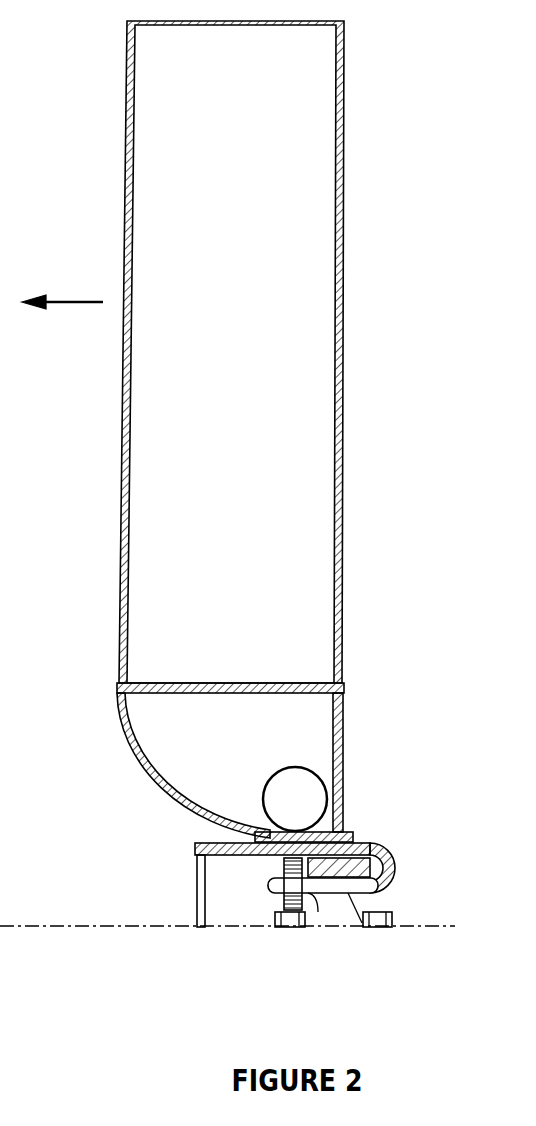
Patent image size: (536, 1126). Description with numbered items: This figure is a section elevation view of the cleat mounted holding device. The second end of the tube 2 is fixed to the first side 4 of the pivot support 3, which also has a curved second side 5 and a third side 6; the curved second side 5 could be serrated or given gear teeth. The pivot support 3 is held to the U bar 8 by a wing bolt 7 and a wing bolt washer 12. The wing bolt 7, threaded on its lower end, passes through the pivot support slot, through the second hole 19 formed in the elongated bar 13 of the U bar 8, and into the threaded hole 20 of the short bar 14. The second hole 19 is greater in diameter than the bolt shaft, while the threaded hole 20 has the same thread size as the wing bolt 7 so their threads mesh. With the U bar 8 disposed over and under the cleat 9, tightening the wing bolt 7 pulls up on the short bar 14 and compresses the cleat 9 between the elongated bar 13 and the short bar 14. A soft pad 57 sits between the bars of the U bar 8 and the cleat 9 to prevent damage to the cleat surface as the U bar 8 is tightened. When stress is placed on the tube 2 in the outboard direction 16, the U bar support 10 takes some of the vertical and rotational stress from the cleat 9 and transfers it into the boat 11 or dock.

The tube 2 is at (124, 378).
The pivot support 3 is at (350, 752).
The first side 4 is at (222, 682).
The curved second side 5 is at (122, 732).
The third side 6 is at (350, 786).
The wing bolt 7 is at (287, 767).
The U bar 8 is at (390, 884).
The cleat 9 is at (395, 868).
The U bar support 10 is at (197, 890).
The boat 11 is at (133, 925).
The wing bolt washer 12 is at (290, 820).
The elongated bar 13 is at (200, 843).
The short bar 14 is at (272, 890).
The outboard direction 16 is at (83, 300).
The second hole 19 is at (355, 832).
The threaded hole 20 is at (310, 898).
The soft pad 57 is at (340, 893).